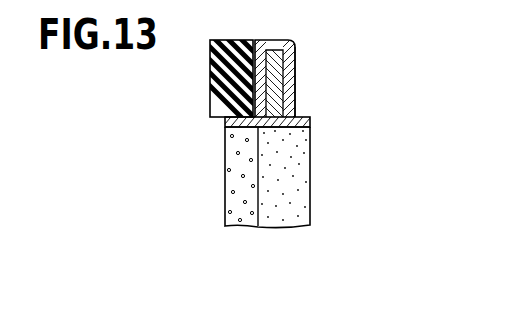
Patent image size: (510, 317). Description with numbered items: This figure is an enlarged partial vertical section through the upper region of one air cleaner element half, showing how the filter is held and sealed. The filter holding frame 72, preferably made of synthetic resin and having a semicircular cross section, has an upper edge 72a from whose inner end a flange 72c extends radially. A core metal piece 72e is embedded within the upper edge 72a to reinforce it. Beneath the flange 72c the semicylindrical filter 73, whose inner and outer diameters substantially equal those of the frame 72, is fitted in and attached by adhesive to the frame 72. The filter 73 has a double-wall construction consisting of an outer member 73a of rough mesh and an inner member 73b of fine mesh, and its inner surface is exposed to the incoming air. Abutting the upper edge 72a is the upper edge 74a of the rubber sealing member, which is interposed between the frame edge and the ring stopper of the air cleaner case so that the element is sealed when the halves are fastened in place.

The filter holding frame 72 is at (300, 52).
The upper edge 72a is at (298, 78).
The flange 72c is at (310, 117).
The core metal piece 72e is at (272, 44).
The semicylindrical filter 73 is at (277, 228).
The outer member 73a is at (305, 183).
The inner member 73b is at (225, 208).
The upper edge of rubber sealing member 74a is at (210, 93).